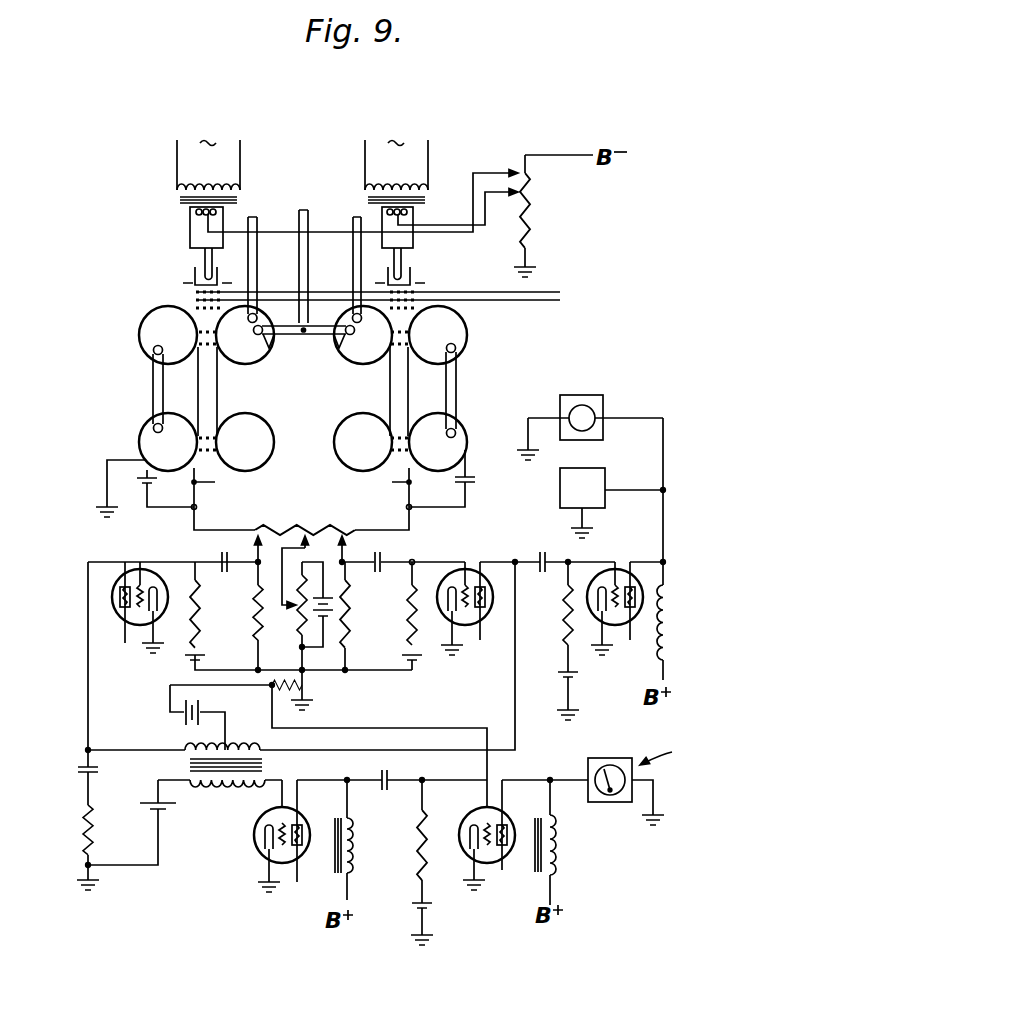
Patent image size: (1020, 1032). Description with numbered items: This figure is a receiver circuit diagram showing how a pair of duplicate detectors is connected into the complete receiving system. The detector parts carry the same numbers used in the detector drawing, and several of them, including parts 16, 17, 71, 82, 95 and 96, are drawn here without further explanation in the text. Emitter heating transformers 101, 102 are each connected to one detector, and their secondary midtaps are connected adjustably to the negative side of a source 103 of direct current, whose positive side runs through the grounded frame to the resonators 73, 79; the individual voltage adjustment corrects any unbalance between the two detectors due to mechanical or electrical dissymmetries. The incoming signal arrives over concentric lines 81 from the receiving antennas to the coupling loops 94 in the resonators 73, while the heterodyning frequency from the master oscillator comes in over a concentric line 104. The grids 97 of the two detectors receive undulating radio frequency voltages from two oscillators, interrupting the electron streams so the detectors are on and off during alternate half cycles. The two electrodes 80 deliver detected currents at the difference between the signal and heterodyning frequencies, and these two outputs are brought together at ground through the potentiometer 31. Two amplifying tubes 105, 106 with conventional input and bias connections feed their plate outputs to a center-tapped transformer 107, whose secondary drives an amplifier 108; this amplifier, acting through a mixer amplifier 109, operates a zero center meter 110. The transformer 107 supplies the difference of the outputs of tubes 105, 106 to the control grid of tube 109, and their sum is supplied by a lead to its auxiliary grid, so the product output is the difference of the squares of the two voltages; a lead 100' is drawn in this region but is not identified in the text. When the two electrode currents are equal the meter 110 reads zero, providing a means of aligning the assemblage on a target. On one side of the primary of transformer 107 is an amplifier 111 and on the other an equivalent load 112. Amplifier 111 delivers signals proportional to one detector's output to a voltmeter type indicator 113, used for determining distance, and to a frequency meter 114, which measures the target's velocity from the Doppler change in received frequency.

The emitter heating transformer 101 is at (180, 212).
The emitter heating transformer 102 is at (433, 195).
The source of direct current 103 is at (540, 233).
The concentric line 104 is at (303, 213).
The concentric lines 81 is at (252, 215).
The cross bar 82 is at (325, 345).
The contact box 71 is at (192, 274).
The grids 97 is at (192, 298).
The resonators 73 is at (138, 338).
The coupling loops 94 is at (304, 335).
The pivots 95 is at (263, 356).
The resonators 79 is at (138, 442).
The left assembly 16 is at (236, 401).
The right assembly 17 is at (413, 401).
The links 96 is at (150, 390).
The electrodes 80 is at (202, 488).
The potentiometer 31 is at (306, 526).
The indicator 113 is at (550, 410).
The frequency meter 114 is at (560, 490).
The amplifying tube 105 is at (110, 596).
The amplifying tube 106 is at (466, 565).
The amplifier 111 is at (620, 560).
The load 112 is at (84, 836).
The feedback loop 100' is at (387, 684).
The center-tapped transformer 107 is at (222, 796).
The amplifier 108 is at (256, 858).
The mixer amplifier 109 is at (496, 880).
The zero center meter 110 is at (608, 812).